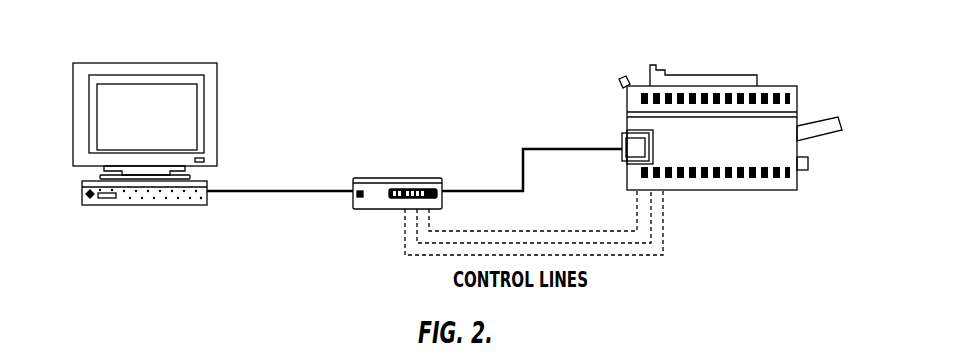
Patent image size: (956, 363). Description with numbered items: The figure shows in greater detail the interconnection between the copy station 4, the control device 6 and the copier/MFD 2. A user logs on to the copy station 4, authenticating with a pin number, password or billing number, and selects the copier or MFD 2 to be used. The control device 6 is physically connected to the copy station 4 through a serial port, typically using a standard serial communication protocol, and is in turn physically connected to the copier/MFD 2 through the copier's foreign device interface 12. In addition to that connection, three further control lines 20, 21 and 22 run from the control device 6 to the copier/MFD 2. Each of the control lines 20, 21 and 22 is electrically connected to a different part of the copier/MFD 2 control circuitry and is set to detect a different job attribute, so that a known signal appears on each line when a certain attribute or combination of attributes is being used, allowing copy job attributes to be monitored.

The copier/MFD 2 is at (797, 99).
The copy station 4 is at (217, 102).
The control device 6 is at (353, 202).
The foreign device interface 12 is at (621, 153).
The control line 20 is at (443, 227).
The control line 21 is at (400, 223).
The control line 22 is at (432, 258).